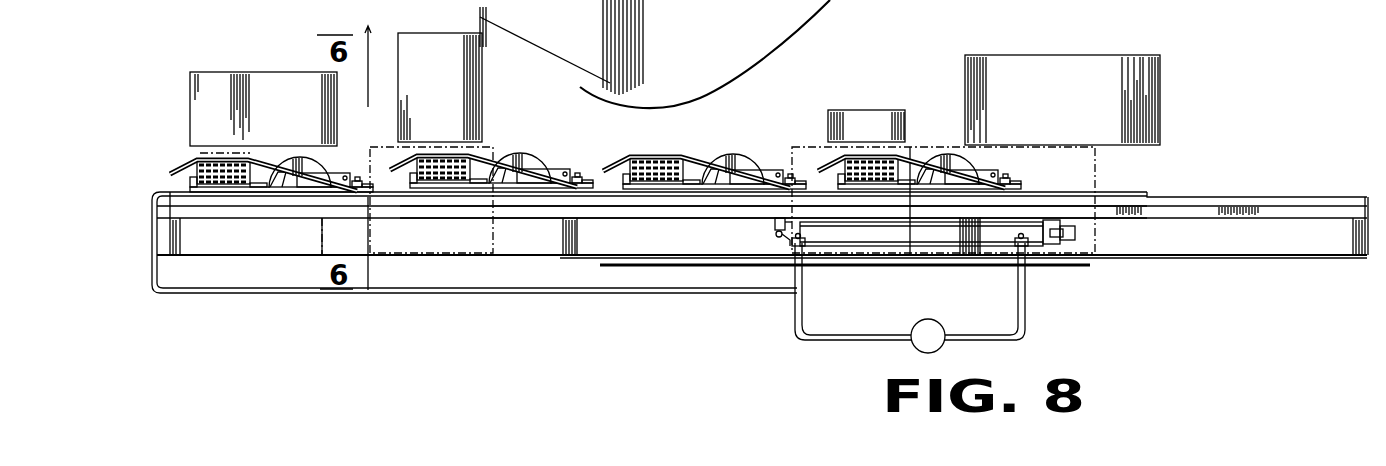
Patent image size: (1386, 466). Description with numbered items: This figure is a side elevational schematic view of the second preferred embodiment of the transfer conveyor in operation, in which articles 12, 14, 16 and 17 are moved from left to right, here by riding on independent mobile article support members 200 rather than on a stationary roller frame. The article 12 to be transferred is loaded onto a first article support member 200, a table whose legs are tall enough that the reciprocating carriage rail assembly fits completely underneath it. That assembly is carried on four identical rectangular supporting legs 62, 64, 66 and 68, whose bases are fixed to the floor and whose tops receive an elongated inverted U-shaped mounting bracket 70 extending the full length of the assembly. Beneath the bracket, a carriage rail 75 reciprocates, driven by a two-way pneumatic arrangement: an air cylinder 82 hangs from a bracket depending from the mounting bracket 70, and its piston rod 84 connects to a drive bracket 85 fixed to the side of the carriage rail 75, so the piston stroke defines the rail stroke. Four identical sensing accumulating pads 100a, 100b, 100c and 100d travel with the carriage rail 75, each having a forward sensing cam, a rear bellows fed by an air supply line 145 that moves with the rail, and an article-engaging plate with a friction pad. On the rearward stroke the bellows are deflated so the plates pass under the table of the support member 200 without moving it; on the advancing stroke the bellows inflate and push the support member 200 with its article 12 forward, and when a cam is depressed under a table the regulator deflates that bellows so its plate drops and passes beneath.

The article 12 is at (873, 134).
The article 14 is at (440, 64).
The article 16 is at (310, 102).
The article 17 is at (1057, 110).
The supporting leg 62 is at (175, 253).
The supporting leg 64 is at (566, 256).
The supporting leg 66 is at (960, 254).
The supporting leg 68 is at (1357, 244).
The mounting bracket 70 is at (505, 212).
The carriage rail 75 is at (590, 202).
The air cylinder 82 is at (915, 254).
The piston rod 84 is at (784, 233).
The drive bracket 85 is at (772, 223).
The sensing accumulating pad 100a is at (259, 183).
The sensing accumulating pad 100b is at (475, 184).
The sensing accumulating pad 100c is at (704, 143).
The sensing accumulating pad 100d is at (943, 154).
The air supply line 145 is at (406, 295).
The article support member 200 is at (655, 54).